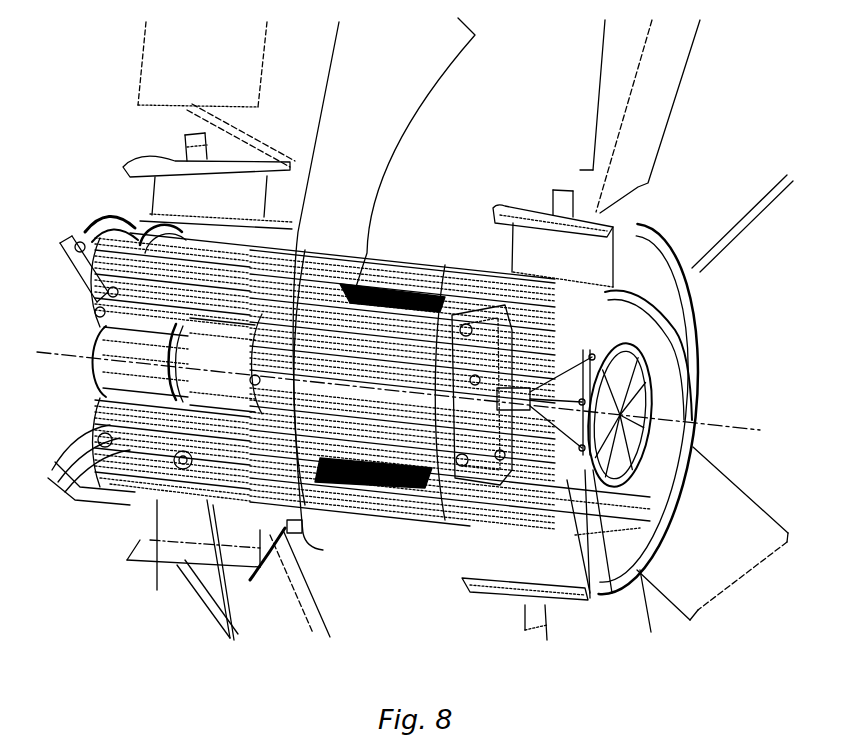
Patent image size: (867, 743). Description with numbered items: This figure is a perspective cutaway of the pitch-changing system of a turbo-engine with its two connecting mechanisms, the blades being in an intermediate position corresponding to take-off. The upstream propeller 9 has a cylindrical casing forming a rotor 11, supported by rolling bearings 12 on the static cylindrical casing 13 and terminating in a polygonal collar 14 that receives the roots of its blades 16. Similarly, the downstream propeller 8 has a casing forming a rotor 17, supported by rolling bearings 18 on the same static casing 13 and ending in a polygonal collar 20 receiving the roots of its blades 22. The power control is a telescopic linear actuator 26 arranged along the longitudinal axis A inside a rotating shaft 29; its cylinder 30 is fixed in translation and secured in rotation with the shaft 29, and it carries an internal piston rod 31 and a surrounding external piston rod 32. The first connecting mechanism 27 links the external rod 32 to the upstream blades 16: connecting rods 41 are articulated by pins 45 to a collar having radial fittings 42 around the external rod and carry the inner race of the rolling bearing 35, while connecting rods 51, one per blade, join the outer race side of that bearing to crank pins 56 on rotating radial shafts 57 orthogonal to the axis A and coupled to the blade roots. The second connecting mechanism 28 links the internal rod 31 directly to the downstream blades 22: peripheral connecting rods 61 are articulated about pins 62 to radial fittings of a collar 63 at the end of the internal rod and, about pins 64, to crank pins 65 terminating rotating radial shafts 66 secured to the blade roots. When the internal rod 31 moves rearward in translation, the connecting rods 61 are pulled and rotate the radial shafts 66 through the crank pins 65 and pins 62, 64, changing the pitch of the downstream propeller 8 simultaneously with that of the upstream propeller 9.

The downstream propeller 8 is at (695, 299).
The upstream propeller 9 is at (105, 148).
The casing forming a rotor 11 is at (79, 242).
The rolling bearings 12 is at (244, 320).
The static cylindrical casing 13 is at (84, 208).
The polygonal collar 14 is at (168, 191).
The blades 16 is at (212, 627).
The casing forming a rotor 17 is at (68, 270).
The rolling bearings 18 is at (98, 446).
The polygonal collar 20 is at (630, 232).
The blades 22 is at (738, 570).
The linear actuator 26 is at (246, 383).
The first connecting mechanism 27 is at (414, 290).
The second connecting mechanism 28 is at (655, 395).
The rotating shaft 29 is at (104, 362).
The cylinder 30 is at (334, 551).
The internal piston rod 31 is at (487, 500).
The external piston rod 32 is at (430, 520).
The rolling bearing 35 is at (352, 290).
The connecting rods 41 is at (448, 297).
The collar having radial fittings 42 is at (518, 365).
The pins 45 is at (508, 335).
The connecting rods 51 is at (310, 253).
The crank pins 56 is at (157, 587).
The rotating radial shafts 57 is at (190, 233).
The connecting rods 61 is at (590, 520).
The pins 62 is at (603, 560).
The collar 63 is at (636, 437).
The pins 64 is at (506, 430).
The crank pins 65 is at (516, 440).
The rotating radial shafts 66 is at (640, 250).
The longitudinal axis A is at (743, 425).